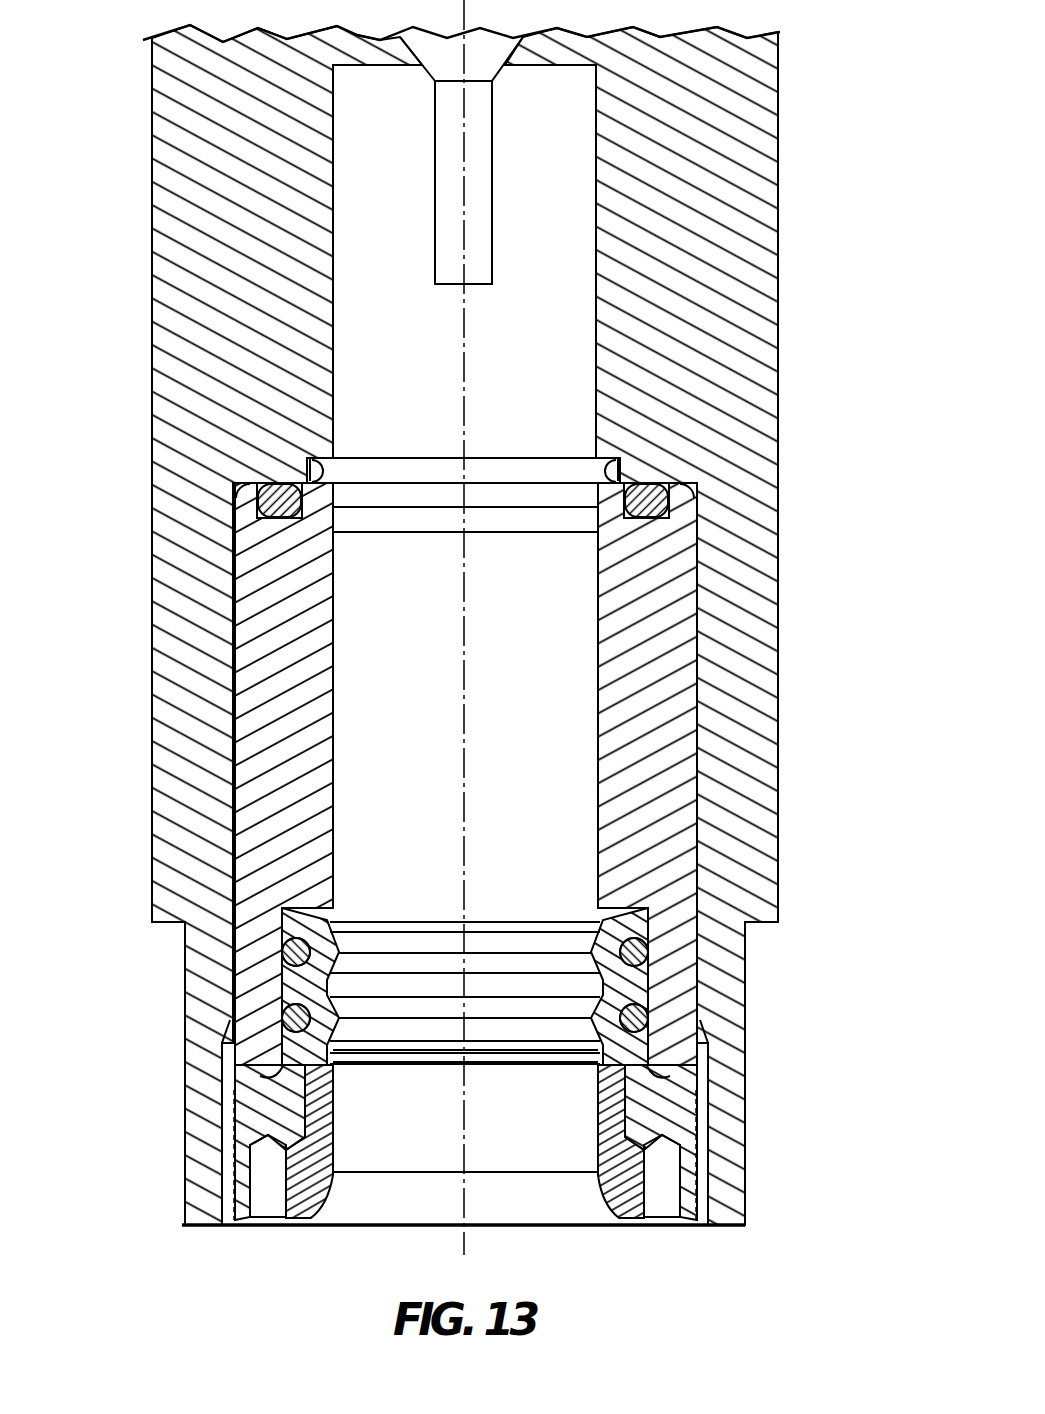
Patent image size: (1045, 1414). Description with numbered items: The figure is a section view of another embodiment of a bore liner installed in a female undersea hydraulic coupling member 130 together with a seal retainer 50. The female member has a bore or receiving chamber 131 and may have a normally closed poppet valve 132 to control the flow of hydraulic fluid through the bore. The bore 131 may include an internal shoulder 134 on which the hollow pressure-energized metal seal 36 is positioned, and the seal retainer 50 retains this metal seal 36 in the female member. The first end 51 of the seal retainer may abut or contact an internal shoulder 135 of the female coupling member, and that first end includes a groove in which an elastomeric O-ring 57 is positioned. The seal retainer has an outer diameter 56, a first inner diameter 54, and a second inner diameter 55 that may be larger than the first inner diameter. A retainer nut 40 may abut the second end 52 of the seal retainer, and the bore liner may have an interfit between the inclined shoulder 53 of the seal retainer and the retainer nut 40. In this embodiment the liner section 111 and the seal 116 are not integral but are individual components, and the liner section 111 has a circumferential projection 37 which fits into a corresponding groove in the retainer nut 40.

The female undersea hydraulic coupling member 130 is at (765, 172).
The bore 131 is at (570, 78).
The normally closed poppet valve 132 is at (481, 136).
The internal shoulder 134 is at (307, 476).
The internal shoulder 135 is at (233, 498).
The pressure-energized metal seal 36 is at (605, 462).
The first end 51 is at (682, 483).
The elastomeric O-ring 57 is at (671, 497).
The seal retainer 50 is at (615, 675).
The first inner diameter 54 is at (598, 723).
The outer diameter 56 is at (698, 697).
The inclined shoulder 53 is at (588, 942).
The second inner diameter 55 is at (648, 997).
The seal 116 is at (232, 1018).
The liner section 111 is at (325, 1125).
The retainer nut 40 is at (687, 1122).
The second end 52 is at (657, 1078).
The circumferential projection 37 is at (620, 1118).